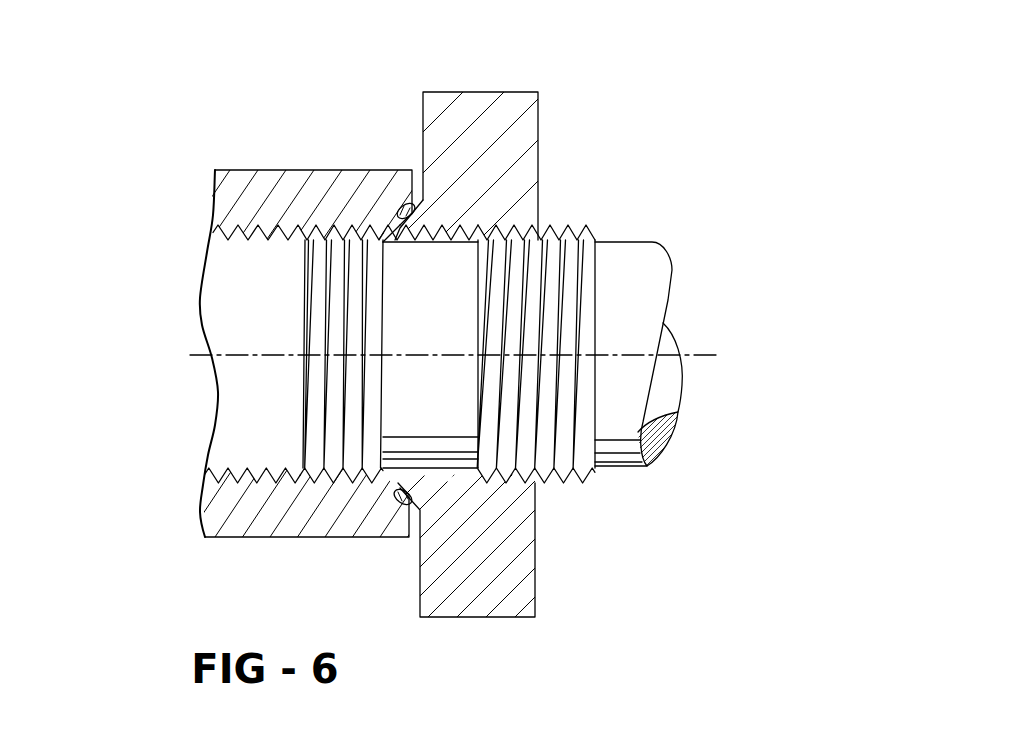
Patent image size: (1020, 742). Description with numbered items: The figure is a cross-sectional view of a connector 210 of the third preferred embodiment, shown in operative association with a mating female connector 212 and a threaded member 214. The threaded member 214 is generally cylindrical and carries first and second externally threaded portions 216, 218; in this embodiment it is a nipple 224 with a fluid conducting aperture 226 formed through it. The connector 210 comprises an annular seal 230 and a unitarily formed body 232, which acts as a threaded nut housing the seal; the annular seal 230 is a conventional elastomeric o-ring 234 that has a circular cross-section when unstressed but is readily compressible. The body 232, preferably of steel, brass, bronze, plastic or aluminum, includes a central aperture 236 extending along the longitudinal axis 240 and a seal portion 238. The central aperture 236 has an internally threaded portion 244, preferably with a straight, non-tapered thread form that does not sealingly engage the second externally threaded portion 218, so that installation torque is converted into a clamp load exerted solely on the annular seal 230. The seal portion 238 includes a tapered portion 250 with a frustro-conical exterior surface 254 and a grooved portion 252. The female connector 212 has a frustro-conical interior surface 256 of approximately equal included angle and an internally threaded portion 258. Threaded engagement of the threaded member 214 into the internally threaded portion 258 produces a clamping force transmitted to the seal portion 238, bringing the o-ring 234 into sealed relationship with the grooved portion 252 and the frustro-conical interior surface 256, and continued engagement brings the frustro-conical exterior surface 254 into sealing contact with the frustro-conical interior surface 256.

The connector 210 is at (556, 196).
The mating female connector 212 is at (240, 174).
The threaded member 214 is at (659, 254).
The first externally threaded portion 216 is at (304, 356).
The second externally threaded portion 218 is at (556, 467).
The nipple 224 is at (623, 448).
The fluid conducting aperture 226 is at (694, 354).
The annular seal 230 is at (412, 202).
The body 232 is at (520, 115).
The o-ring 234 is at (415, 242).
The central aperture 236 is at (455, 227).
The seal portion 238 is at (419, 209).
The longitudinal axis 240 is at (641, 357).
The internally threaded portion 244 is at (498, 480).
The tapered portion 250 is at (421, 510).
The grooved portion 252 is at (400, 502).
The frustro-conical exterior surface 254 is at (406, 203).
The frustro-conical interior surface 256 is at (393, 223).
The internally threaded portion 258 is at (240, 232).